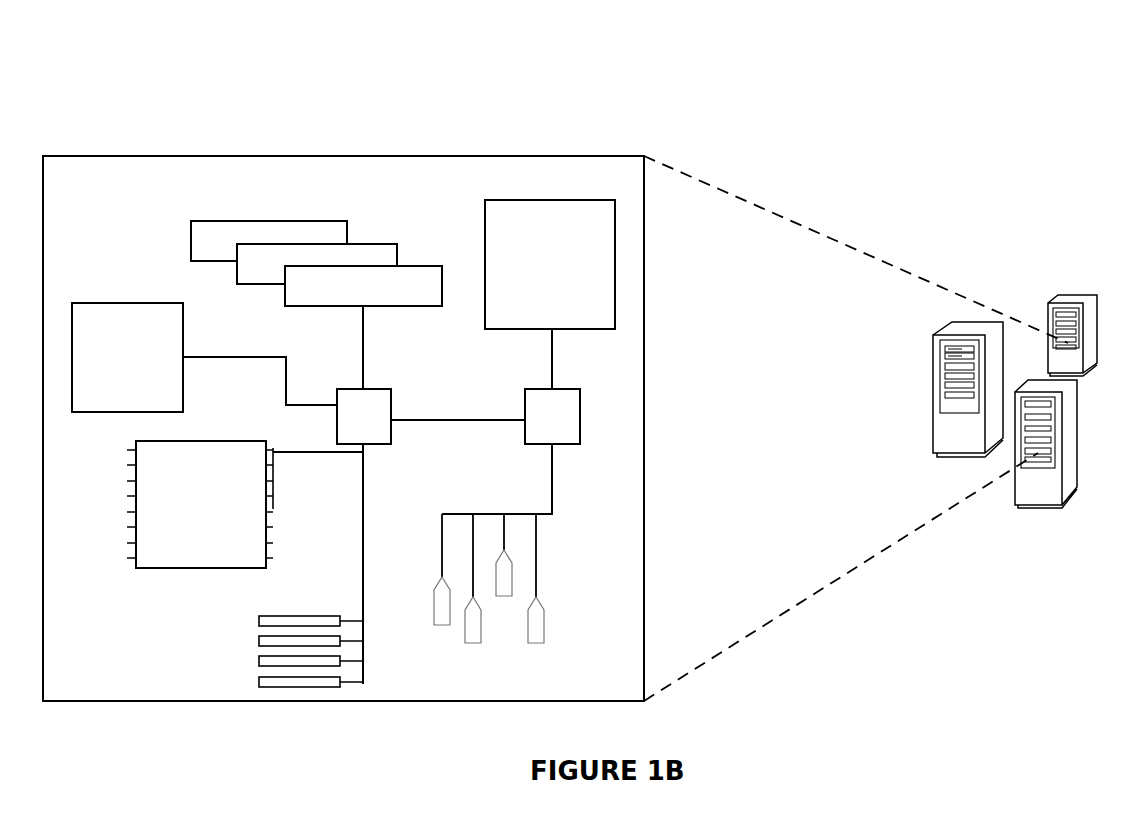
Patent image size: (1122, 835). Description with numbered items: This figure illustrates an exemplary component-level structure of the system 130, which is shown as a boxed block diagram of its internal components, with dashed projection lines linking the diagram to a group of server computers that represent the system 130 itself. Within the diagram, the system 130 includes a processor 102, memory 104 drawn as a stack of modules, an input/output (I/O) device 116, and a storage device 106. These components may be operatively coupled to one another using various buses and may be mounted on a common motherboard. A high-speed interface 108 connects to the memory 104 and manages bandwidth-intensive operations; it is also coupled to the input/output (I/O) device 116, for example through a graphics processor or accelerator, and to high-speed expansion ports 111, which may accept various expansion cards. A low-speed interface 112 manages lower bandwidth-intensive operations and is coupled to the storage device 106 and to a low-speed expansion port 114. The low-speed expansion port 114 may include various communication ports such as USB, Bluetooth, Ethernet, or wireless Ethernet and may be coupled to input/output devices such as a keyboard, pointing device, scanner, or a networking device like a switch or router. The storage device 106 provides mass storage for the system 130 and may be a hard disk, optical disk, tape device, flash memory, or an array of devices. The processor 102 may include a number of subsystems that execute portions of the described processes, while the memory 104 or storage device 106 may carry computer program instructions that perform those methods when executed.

The processor 102 is at (194, 552).
The memory 104 is at (301, 221).
The storage device 106 is at (592, 248).
The high-speed interface 108 is at (379, 405).
The high-speed expansion ports 111 is at (317, 688).
The low-speed interface 112 is at (568, 418).
The low-speed expansion port 114 is at (553, 546).
The input/output (I/O) device 116 is at (152, 327).
The system 130 is at (770, 78).